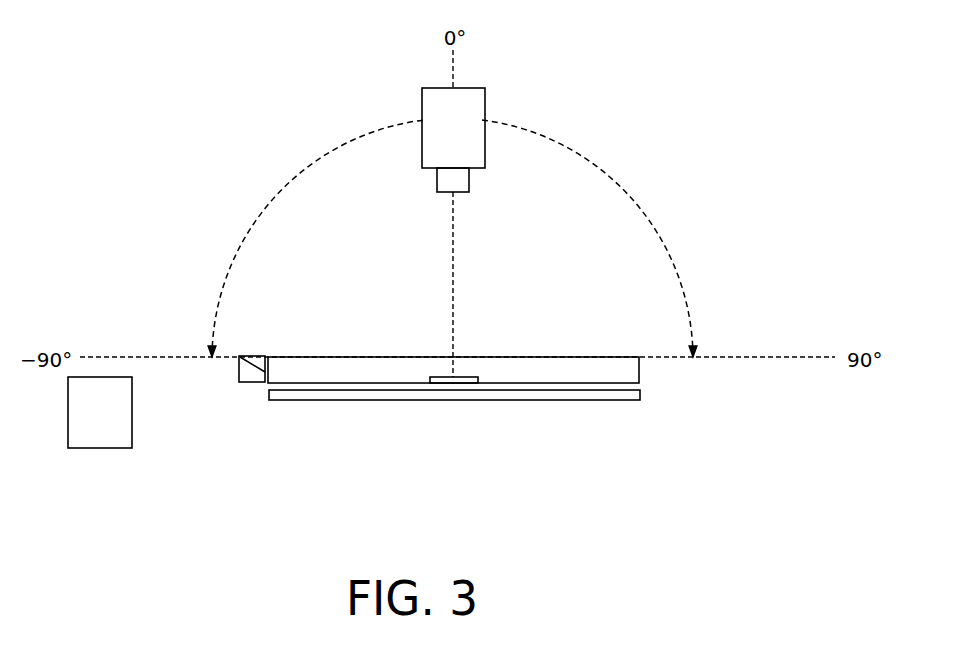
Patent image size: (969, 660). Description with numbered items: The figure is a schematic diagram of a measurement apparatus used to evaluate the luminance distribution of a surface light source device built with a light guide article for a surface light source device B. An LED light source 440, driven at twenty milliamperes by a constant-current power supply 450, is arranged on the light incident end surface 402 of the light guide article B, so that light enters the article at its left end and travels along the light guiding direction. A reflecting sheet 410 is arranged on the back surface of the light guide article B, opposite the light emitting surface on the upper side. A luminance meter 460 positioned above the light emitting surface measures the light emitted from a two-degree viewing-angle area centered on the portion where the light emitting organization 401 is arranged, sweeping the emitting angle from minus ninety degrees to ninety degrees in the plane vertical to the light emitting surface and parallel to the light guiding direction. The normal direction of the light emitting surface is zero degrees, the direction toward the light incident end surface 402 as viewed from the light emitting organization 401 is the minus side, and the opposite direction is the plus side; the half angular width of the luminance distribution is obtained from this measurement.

The luminance meter 460 is at (473, 102).
The constant-current power supply 450 is at (239, 366).
The LED light source 440 is at (260, 383).
The light incident end surface 402 is at (250, 357).
The light emitting organization 401 is at (457, 383).
The reflecting sheet 410 is at (610, 401).
The light guide article for surface light source device B is at (639, 368).